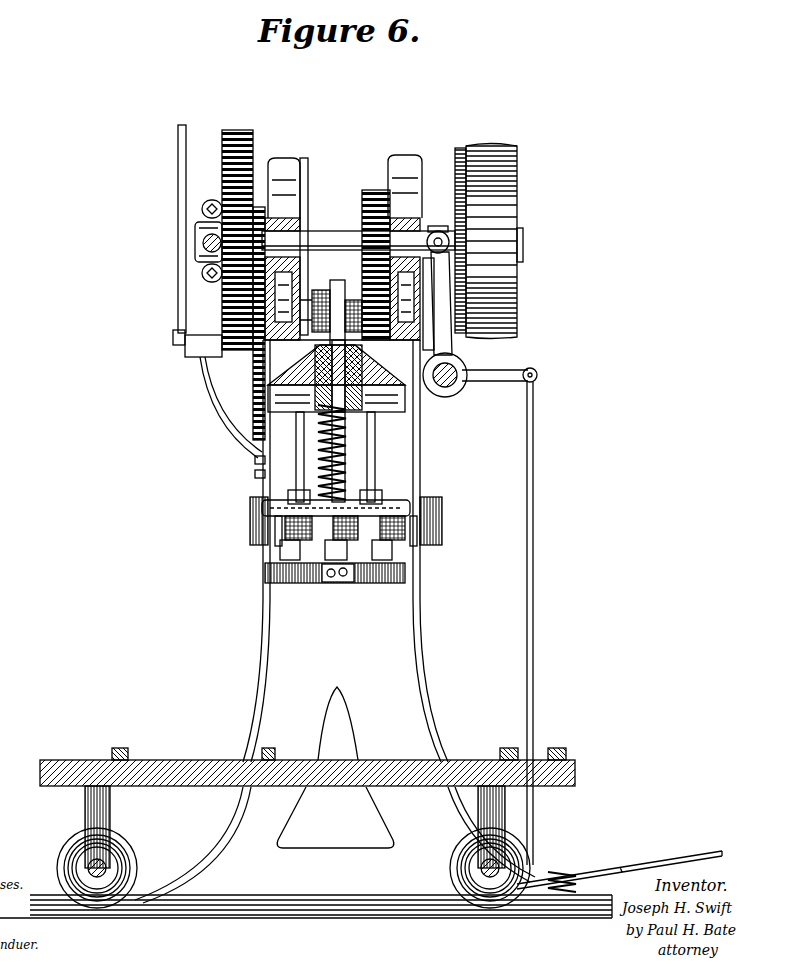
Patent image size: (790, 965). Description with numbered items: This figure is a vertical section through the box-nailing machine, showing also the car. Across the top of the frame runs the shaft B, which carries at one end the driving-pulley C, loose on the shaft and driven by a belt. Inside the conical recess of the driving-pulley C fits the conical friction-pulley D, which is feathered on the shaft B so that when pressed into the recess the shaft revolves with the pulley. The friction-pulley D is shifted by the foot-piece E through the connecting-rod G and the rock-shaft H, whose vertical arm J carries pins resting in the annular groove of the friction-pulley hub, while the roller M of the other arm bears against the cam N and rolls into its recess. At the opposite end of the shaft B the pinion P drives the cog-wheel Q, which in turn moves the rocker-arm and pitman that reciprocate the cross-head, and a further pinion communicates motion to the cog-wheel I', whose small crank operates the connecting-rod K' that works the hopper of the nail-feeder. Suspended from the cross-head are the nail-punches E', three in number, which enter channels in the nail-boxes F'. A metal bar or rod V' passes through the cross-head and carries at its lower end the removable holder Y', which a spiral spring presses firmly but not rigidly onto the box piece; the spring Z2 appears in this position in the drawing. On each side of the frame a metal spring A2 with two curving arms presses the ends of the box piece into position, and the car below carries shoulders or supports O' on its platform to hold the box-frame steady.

The cog-wheel Q is at (237, 228).
The pinion P is at (195, 235).
The connecting-rod K' is at (188, 241).
The cog-wheel I' is at (250, 323).
The shaft B is at (358, 228).
The roller M is at (438, 230).
The conical friction-pulley D is at (455, 158).
The driving-pulley C is at (494, 241).
The vertical arm J is at (437, 303).
The rock-shaft H is at (447, 390).
The connecting-rod G is at (506, 616).
The spring Z2 is at (347, 438).
The metal bar or rod V' is at (353, 457).
The nail-punches E' is at (342, 458).
The removable top or side holder Y' is at (346, 524).
The metal spring A2 is at (300, 582).
The cam N is at (175, 787).
The shoulders or supports O' is at (354, 745).
The foot-piece E is at (619, 864).
The nail-boxes F' is at (569, 882).